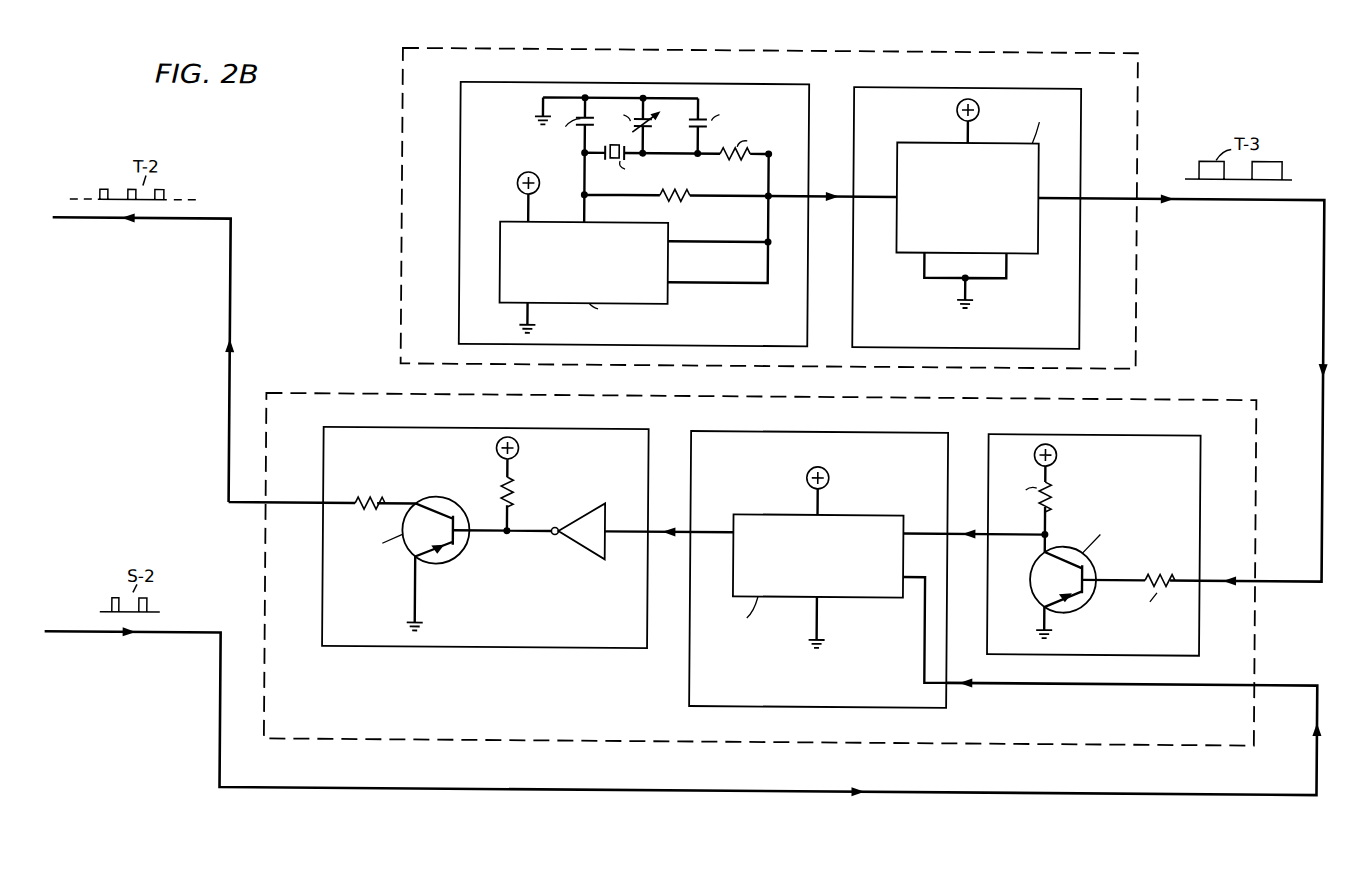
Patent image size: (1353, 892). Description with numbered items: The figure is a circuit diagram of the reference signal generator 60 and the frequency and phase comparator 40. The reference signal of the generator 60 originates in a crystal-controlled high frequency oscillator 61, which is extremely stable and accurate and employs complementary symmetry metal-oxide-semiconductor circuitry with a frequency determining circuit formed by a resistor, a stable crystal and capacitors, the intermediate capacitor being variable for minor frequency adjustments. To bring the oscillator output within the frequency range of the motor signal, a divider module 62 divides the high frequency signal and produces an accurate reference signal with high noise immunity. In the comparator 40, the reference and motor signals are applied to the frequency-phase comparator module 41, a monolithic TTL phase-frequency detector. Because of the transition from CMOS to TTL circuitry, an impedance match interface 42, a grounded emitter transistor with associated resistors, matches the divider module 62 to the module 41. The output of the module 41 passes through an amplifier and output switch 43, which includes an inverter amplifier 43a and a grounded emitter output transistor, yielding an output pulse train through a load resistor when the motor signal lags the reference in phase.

The frequency and phase comparator 40 is at (1236, 397).
The frequency-phase comparator module 41 is at (692, 674).
The impedance match interface 42 is at (1201, 489).
The amplifier and output switch 43 is at (324, 575).
The inverter amplifier 43a is at (573, 553).
The reference signal generator 60 is at (399, 308).
The high frequency oscillator 61 is at (457, 260).
The divider module 62 is at (1078, 290).